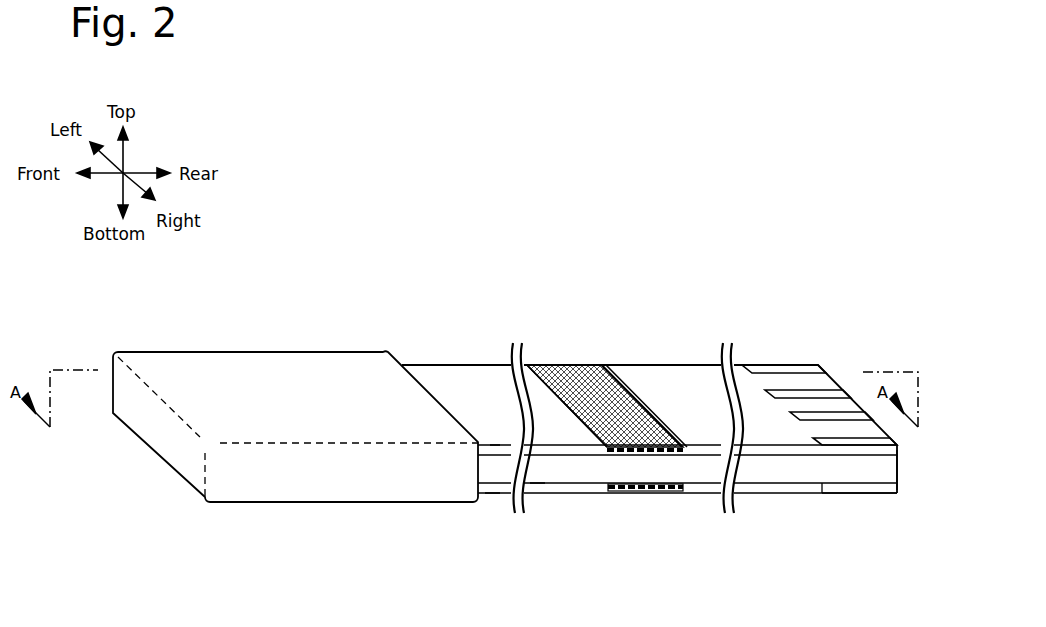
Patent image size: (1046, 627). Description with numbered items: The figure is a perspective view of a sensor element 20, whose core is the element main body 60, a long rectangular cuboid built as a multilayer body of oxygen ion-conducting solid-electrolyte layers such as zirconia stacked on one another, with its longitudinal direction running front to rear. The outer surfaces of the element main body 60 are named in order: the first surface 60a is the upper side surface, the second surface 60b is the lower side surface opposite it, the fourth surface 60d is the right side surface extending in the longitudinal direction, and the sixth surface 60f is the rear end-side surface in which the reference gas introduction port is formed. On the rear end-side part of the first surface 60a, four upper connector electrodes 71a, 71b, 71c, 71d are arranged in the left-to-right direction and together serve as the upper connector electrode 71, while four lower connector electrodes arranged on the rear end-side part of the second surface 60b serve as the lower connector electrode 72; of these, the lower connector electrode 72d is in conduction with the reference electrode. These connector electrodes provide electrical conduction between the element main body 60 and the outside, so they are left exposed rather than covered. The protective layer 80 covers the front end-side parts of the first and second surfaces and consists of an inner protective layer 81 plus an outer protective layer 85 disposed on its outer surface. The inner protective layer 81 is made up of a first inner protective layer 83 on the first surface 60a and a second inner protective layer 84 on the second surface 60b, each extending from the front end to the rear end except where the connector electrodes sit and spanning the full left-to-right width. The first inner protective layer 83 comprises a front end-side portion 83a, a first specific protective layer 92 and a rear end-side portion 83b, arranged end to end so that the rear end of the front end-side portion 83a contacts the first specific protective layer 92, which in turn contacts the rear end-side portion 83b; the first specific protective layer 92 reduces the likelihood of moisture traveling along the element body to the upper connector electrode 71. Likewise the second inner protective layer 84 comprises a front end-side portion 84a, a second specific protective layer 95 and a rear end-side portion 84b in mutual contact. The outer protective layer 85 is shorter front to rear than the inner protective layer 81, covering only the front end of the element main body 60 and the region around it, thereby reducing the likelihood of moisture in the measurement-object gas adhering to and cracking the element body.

The sensor element 20 is at (794, 162).
The protective layer 80 is at (500, 225).
The outer protective layer 85 is at (377, 370).
The inner protective layer 81 is at (538, 258).
The first inner protective layer 83 is at (638, 305).
The front end-side portion 83a is at (538, 392).
The rear end-side portion 83b is at (628, 374).
The first specific protective layer 92 is at (575, 372).
The second inner protective layer 84 is at (710, 562).
The front end-side portion 84a is at (598, 491).
The rear end-side portion 84b is at (695, 491).
The second specific protective layer 95 is at (658, 491).
The element main body 60 is at (803, 473).
The first surface 60a is at (494, 448).
The second surface 60b is at (492, 493).
The fourth surface 60d is at (538, 473).
The sixth surface 60f is at (897, 466).
The upper connector electrode 71 is at (885, 310).
The upper connector electrode 71a is at (760, 368).
The upper connector electrode 71b is at (790, 395).
The upper connector electrode 71c is at (823, 417).
The upper connector electrode 71d is at (843, 442).
The lower connector electrode 72 is at (850, 564).
The lower connector electrode 72d is at (852, 489).